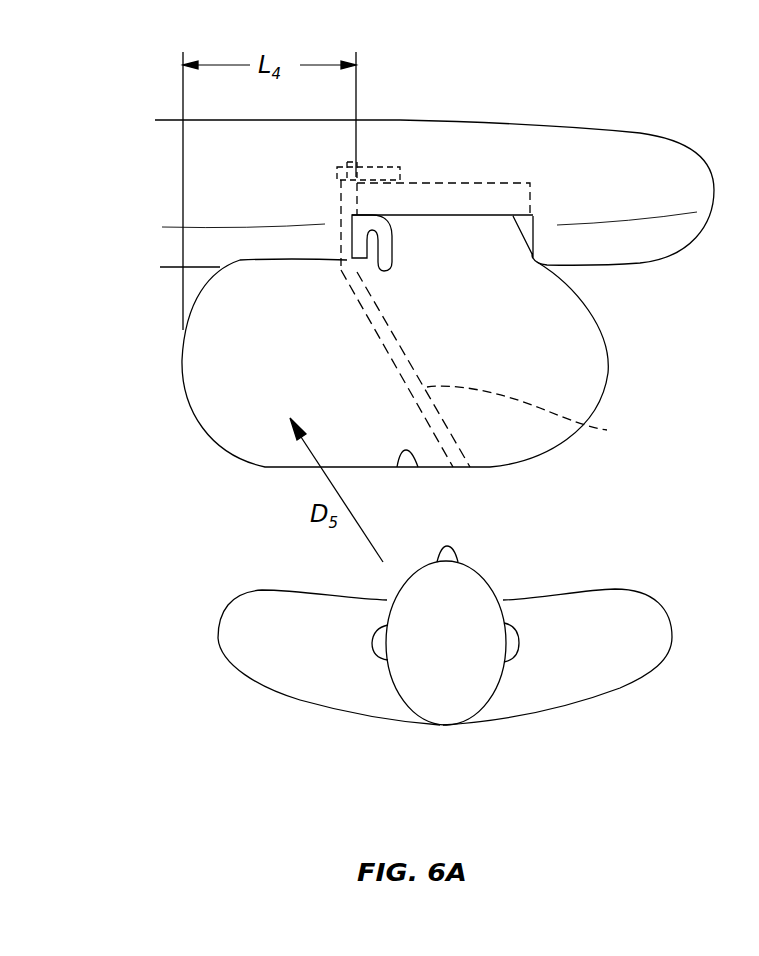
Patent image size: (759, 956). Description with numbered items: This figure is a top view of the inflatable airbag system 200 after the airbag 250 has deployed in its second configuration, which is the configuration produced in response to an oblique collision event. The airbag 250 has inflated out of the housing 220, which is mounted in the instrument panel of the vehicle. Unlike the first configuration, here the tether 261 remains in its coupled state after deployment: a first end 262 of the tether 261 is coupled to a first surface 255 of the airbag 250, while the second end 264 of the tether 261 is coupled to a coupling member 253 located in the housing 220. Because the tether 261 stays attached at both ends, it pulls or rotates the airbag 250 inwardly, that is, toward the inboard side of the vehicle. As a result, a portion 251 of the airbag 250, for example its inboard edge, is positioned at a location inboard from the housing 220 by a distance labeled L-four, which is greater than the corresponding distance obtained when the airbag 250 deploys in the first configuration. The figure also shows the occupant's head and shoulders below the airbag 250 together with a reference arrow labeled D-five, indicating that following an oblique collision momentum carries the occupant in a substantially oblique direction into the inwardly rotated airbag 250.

The inflatable airbag system 200 is at (445, 157).
The housing 220 is at (469, 183).
The airbag 250 is at (578, 374).
The portion 251 is at (182, 362).
The coupling member 253 is at (373, 167).
The first surface 255 is at (403, 468).
The tether 261 is at (607, 430).
The first end 262 is at (453, 431).
The second end 264 is at (337, 186).